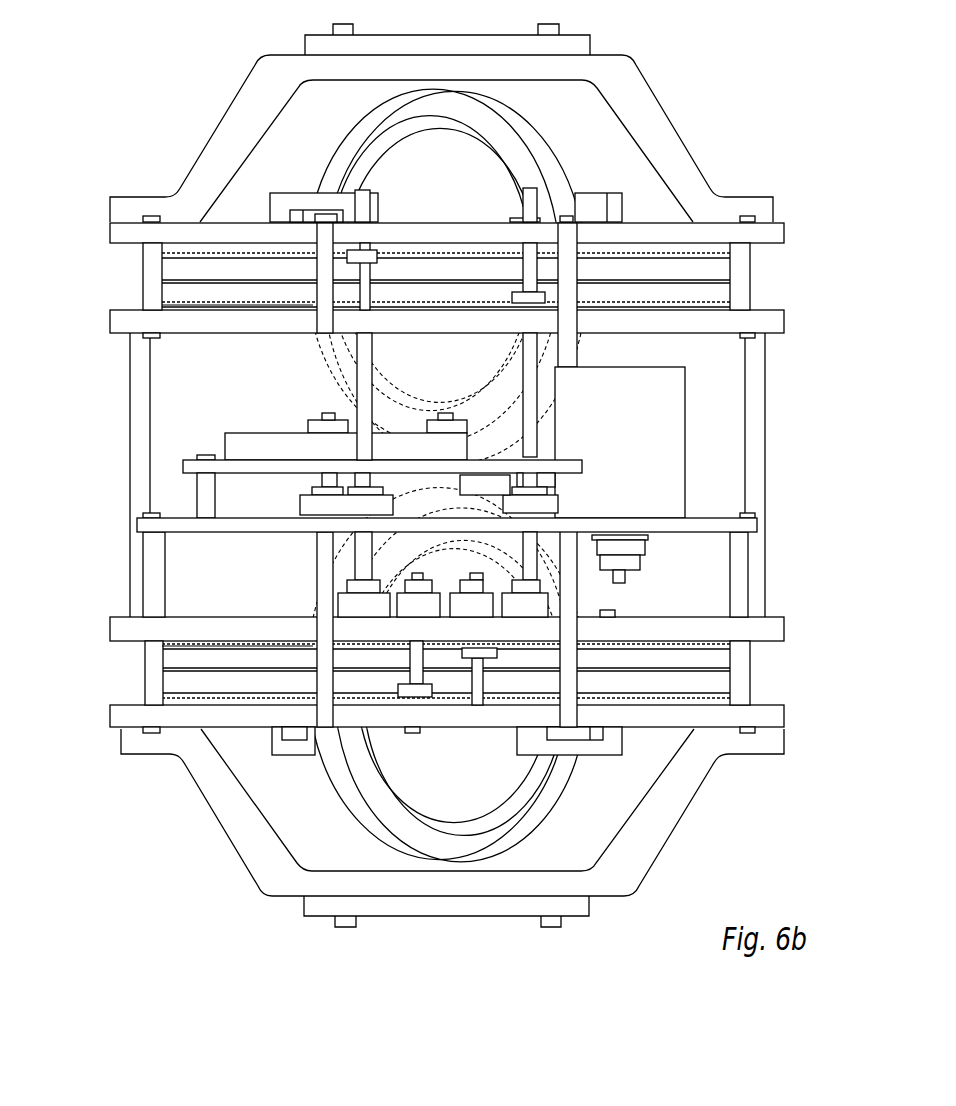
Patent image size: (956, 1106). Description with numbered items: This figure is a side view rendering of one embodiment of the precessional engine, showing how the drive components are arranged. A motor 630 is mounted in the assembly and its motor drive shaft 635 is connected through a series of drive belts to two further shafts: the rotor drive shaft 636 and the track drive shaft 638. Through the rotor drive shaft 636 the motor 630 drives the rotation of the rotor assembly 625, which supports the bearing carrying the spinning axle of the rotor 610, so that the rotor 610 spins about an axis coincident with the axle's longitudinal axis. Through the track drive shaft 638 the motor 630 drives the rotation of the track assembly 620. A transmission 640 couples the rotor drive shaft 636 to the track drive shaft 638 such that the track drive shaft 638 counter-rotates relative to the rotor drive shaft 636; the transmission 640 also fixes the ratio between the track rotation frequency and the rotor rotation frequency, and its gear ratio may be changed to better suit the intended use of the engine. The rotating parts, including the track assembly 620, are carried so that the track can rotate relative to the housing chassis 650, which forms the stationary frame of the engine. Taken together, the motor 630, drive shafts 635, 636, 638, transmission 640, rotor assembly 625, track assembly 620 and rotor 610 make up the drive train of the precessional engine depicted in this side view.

The rotor 610 is at (447, 475).
The track assembly 620 is at (446, 474).
The rotor assembly 625 is at (210, 300).
The motor 630 is at (620, 442).
The motor drive shaft 635 is at (628, 560).
The rotor drive shaft 636 is at (533, 383).
The track drive shaft 638 is at (365, 400).
The transmission 640 is at (290, 445).
The housing chassis 650 is at (325, 598).